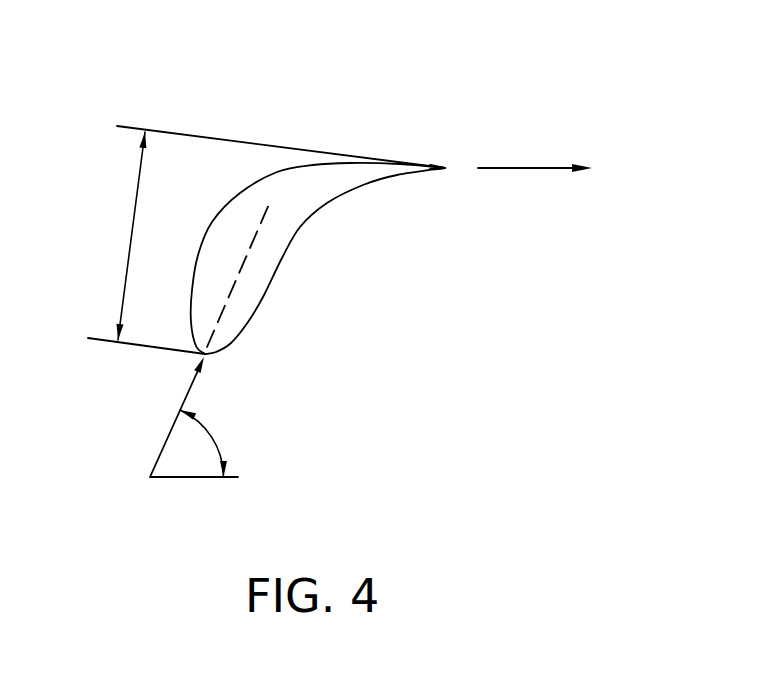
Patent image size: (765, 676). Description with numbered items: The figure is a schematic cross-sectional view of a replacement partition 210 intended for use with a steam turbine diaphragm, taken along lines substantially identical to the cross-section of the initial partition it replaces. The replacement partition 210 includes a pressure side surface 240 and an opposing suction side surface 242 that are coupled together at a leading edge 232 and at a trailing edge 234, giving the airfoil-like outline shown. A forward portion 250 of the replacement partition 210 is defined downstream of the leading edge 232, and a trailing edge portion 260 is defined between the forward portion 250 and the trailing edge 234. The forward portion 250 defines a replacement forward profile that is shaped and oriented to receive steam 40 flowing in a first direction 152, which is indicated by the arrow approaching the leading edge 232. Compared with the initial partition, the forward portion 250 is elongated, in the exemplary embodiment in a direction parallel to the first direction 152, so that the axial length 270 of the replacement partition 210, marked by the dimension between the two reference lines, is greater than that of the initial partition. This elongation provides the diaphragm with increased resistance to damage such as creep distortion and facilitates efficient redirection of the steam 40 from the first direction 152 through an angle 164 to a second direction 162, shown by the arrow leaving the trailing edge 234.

The replacement partition 210 is at (148, 76).
The trailing edge portion 260 is at (370, 141).
The suction side surface 242 is at (240, 193).
The pressure side surface 240 is at (283, 257).
The forward portion 250 is at (276, 312).
The trailing edge 234 is at (465, 157).
The leading edge 232 is at (220, 362).
The axial length 270 is at (135, 208).
The steam 40 is at (530, 168).
The second direction 162 is at (505, 169).
The first direction 152 is at (188, 396).
The angle 164 is at (217, 437).